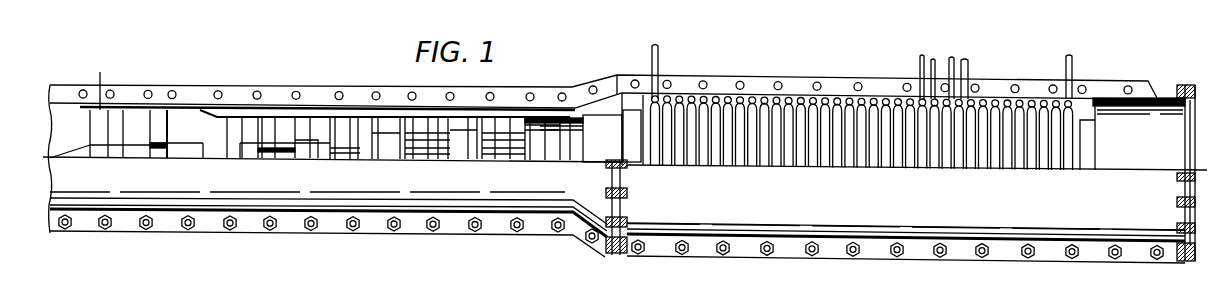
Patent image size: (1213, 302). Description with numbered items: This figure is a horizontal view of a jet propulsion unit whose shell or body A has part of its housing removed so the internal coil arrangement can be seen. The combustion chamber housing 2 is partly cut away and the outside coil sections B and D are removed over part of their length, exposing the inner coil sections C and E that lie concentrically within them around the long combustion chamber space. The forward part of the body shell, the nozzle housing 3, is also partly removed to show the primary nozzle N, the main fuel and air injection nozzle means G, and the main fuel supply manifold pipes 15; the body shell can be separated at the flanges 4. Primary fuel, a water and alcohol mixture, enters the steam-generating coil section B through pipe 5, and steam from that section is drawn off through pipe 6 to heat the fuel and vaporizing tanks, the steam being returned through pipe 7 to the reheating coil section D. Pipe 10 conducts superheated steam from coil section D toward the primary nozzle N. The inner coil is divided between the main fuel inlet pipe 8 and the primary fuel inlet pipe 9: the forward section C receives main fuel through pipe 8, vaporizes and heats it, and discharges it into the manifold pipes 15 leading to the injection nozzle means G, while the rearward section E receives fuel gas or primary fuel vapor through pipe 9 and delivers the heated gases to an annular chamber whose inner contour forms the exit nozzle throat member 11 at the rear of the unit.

The primary nozzle N is at (123, 150).
The main fuel and air injection nozzle means G is at (317, 147).
The main fuel supply manifold pipes 15 is at (530, 113).
The pipe 5 is at (652, 43).
The pipe 6 is at (918, 63).
The pipe 7 is at (932, 58).
The main fuel inlet pipe 8 is at (957, 58).
The primary fuel inlet pipe 9 is at (975, 63).
The pipe 10 is at (1070, 57).
The exit nozzle throat member 11 is at (1117, 123).
The coil section B is at (752, 97).
The coil section C is at (838, 113).
The coil section D is at (988, 108).
The coil section E is at (1025, 117).
The combustion chamber housing 2 is at (670, 197).
The nozzle housing 3 is at (325, 188).
The flanges 4 is at (535, 227).
The shell or body A is at (732, 200).